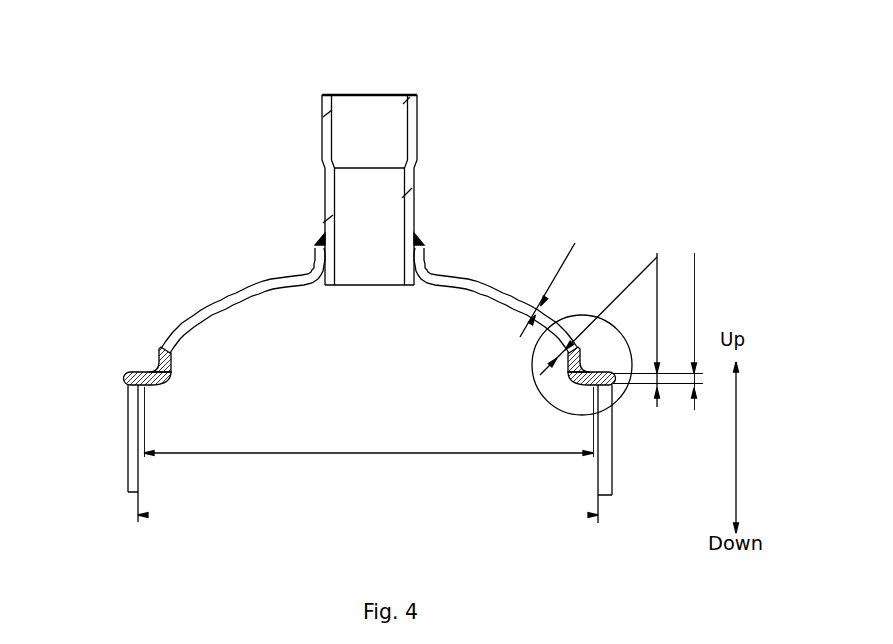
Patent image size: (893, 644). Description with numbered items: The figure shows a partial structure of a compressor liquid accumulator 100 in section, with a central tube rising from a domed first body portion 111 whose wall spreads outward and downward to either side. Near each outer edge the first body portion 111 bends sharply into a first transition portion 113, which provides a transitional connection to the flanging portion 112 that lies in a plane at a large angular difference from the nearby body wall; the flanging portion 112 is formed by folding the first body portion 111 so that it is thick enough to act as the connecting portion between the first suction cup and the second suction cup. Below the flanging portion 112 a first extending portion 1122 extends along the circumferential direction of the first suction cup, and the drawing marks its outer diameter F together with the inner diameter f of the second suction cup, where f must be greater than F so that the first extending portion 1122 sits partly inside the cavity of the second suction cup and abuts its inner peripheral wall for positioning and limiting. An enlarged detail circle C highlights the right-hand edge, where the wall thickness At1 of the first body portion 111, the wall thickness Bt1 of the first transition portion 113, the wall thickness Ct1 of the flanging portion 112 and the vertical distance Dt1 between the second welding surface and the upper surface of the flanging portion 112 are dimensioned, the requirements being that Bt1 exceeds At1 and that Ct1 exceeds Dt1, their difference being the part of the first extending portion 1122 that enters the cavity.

The vessel head assembly with nozzle 100 is at (263, 212).
The first body portion 111 is at (198, 315).
The first transition portion 113 is at (152, 367).
The flanging portion 112 is at (132, 375).
The first extending portion 1122 is at (143, 388).
The outer diameter of the first extending portion F is at (368, 438).
The inner diameter of the second suction cup f is at (368, 503).
The wall thickness of the first body portion At1 is at (543, 288).
The wall thickness of the first transition portion Bt1 is at (598, 312).
The wall thickness of the flanging portion Ct1 is at (680, 331).
The distance between the second welding surface and the upper surface of the flangin Dt1 is at (642, 330).
The detail circle C is at (620, 400).